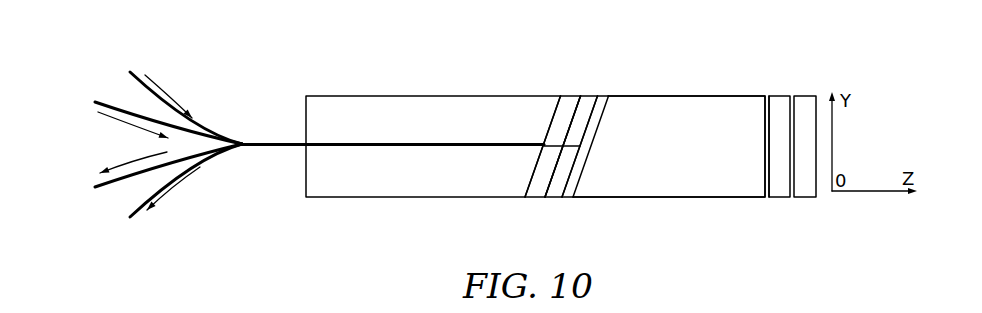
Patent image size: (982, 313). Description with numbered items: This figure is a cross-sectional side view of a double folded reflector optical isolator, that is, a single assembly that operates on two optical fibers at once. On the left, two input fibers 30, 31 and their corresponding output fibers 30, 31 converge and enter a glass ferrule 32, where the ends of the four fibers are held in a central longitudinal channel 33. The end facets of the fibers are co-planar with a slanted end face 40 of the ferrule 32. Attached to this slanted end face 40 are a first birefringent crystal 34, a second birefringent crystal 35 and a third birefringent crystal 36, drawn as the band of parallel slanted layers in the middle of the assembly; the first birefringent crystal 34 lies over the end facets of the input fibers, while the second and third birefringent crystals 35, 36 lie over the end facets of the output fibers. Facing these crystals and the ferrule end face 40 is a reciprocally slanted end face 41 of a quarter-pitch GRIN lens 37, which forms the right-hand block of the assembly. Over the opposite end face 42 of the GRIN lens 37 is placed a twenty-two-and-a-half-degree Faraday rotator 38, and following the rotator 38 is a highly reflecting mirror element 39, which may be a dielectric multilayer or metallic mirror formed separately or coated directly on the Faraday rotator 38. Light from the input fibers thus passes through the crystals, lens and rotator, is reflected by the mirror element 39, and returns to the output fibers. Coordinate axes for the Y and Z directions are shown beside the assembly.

The input fiber 30 is at (137, 72).
The input/output fiber 31 is at (120, 110).
The glass ferrule 32 is at (392, 112).
The central longitudinal channel 33 is at (383, 147).
The first birefringent crystal 34 is at (573, 106).
The second birefringent crystal 35 is at (553, 187).
The third birefringent crystal 36 is at (537, 190).
The quarter-pitch GRIN lens 37 is at (683, 118).
The Faraday rotator 38 is at (779, 96).
The outer end plate 39 is at (814, 198).
The slanted end face of ferrule 40 is at (556, 117).
The reciprocally slanted end face of GRIN lens 41 is at (602, 111).
The opposite end face of GRIN lens 42 is at (772, 198).